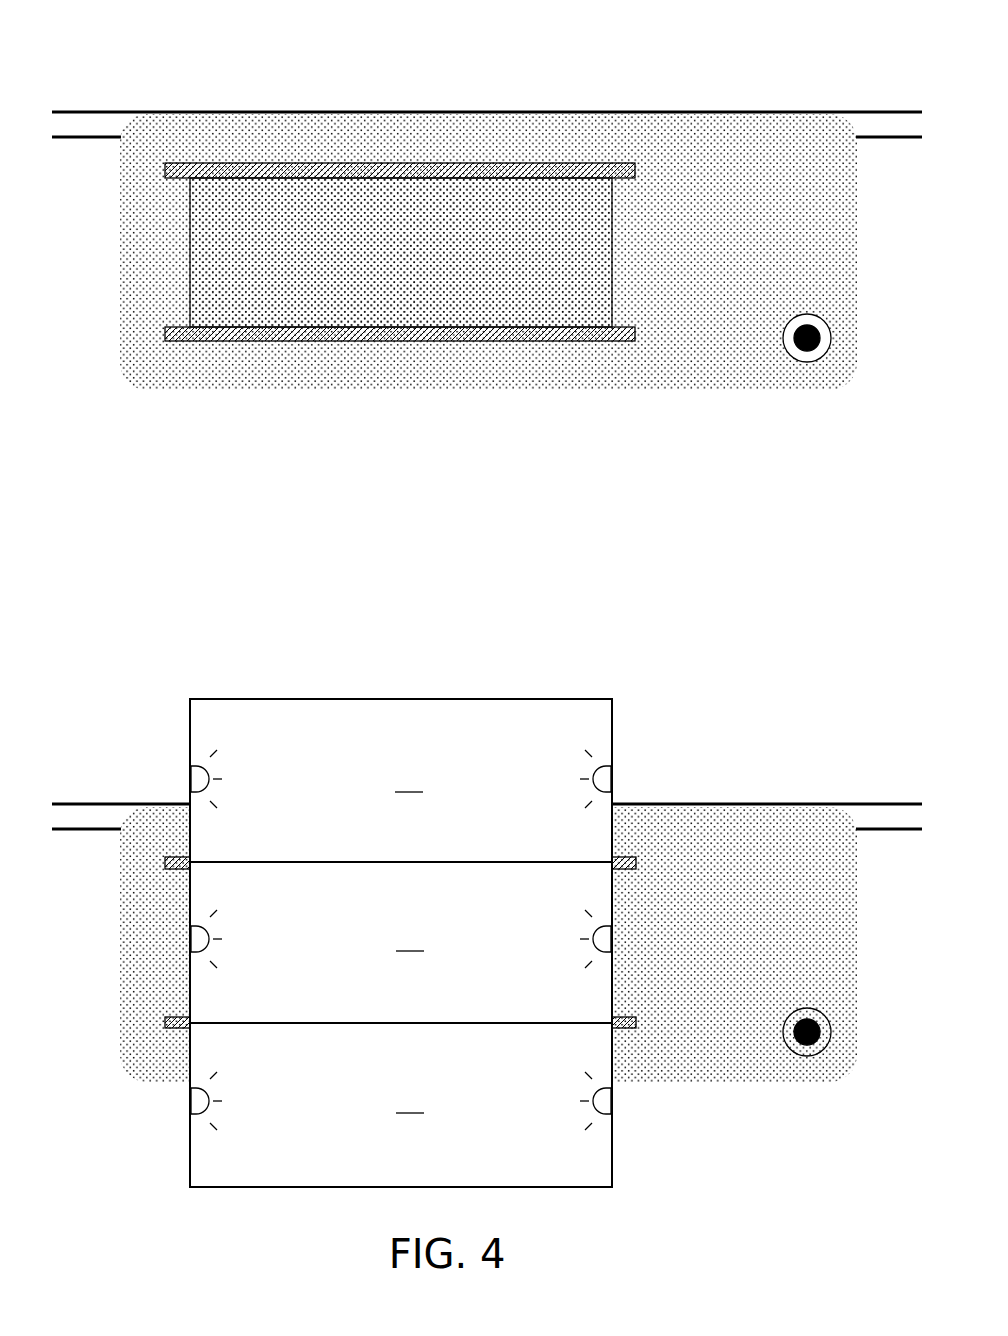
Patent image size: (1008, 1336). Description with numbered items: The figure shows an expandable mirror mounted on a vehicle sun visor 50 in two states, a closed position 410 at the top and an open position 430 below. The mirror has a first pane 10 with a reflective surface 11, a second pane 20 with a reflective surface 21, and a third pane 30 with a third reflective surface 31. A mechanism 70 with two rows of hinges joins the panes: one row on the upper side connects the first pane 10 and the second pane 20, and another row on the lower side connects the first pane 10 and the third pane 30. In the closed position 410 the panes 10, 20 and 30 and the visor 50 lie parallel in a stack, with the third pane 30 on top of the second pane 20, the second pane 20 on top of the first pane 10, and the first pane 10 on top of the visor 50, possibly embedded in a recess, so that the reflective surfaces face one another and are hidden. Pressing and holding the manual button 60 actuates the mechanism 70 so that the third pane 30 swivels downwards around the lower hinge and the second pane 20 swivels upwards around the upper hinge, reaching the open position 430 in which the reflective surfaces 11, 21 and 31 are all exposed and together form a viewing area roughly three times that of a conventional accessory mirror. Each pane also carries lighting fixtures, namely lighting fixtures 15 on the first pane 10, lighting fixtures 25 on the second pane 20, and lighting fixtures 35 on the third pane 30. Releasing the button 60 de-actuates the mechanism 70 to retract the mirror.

The closed position 410 is at (136, 30).
The open position 430 is at (120, 660).
The first pane 10 is at (616, 991).
The reflective surface 11 is at (409, 939).
The lighting fixtures 15 is at (234, 938).
The second pane 20 is at (561, 697).
The reflective surface 21 is at (408, 780).
The lighting fixtures 25 is at (237, 778).
The third pane 30 is at (618, 229).
The third reflective surface 31 is at (409, 1101).
The lighting fixtures 35 is at (234, 1100).
The sun visor 50 is at (117, 366).
The manual button 60 is at (821, 368).
The mechanism 70 is at (640, 170).